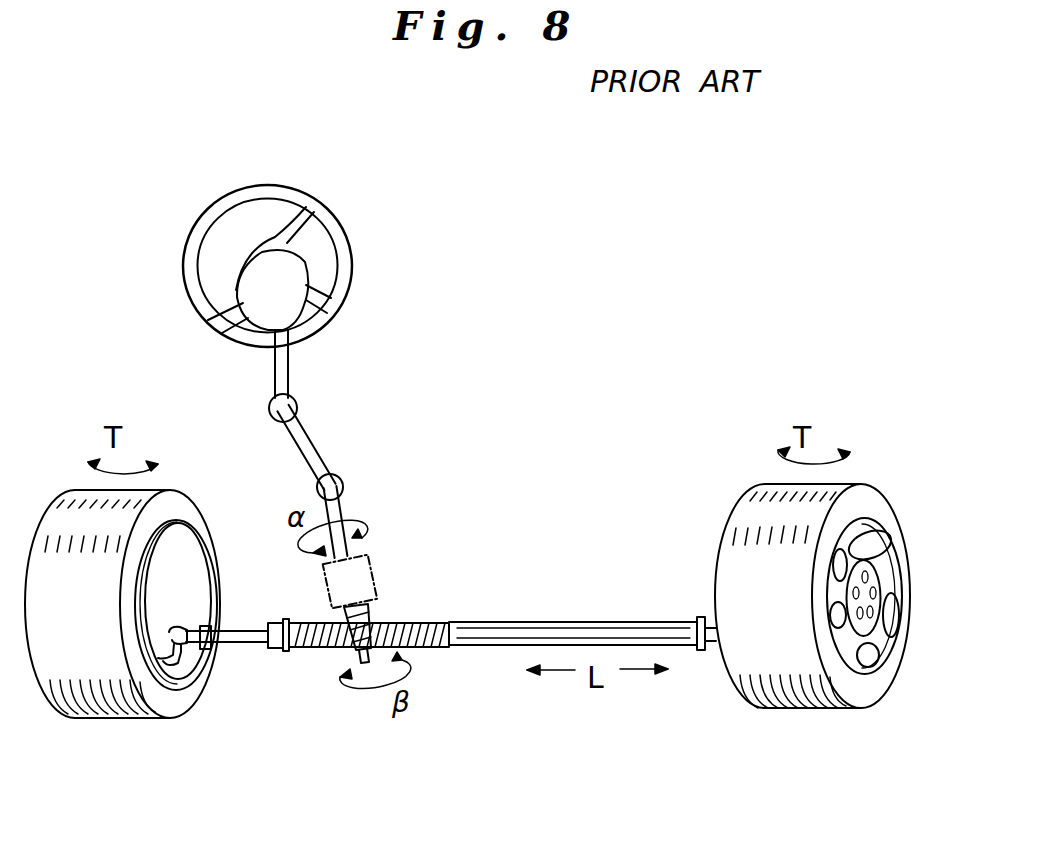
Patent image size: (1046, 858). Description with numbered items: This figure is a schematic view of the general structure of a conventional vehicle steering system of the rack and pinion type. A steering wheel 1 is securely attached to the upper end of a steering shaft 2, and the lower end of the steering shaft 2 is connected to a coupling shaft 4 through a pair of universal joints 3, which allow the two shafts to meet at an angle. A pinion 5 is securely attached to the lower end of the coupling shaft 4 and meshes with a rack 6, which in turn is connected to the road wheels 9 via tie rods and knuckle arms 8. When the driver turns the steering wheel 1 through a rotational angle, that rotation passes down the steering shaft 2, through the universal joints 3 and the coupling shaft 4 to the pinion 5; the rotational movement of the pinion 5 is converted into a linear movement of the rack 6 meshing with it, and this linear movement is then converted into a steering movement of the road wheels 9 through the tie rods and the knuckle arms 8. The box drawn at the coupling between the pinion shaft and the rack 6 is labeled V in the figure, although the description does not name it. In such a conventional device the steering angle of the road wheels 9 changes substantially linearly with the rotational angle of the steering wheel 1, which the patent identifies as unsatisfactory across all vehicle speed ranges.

The steering wheel 1 is at (340, 222).
The steering shaft 2 is at (290, 364).
The universal joints 3 is at (298, 408).
The coupling shaft 4 is at (302, 456).
The pinion 5 is at (352, 650).
The rack 6 is at (443, 646).
The knuckle arms 8 is at (200, 650).
The road wheels 9 is at (111, 718).
The valve V is at (370, 566).